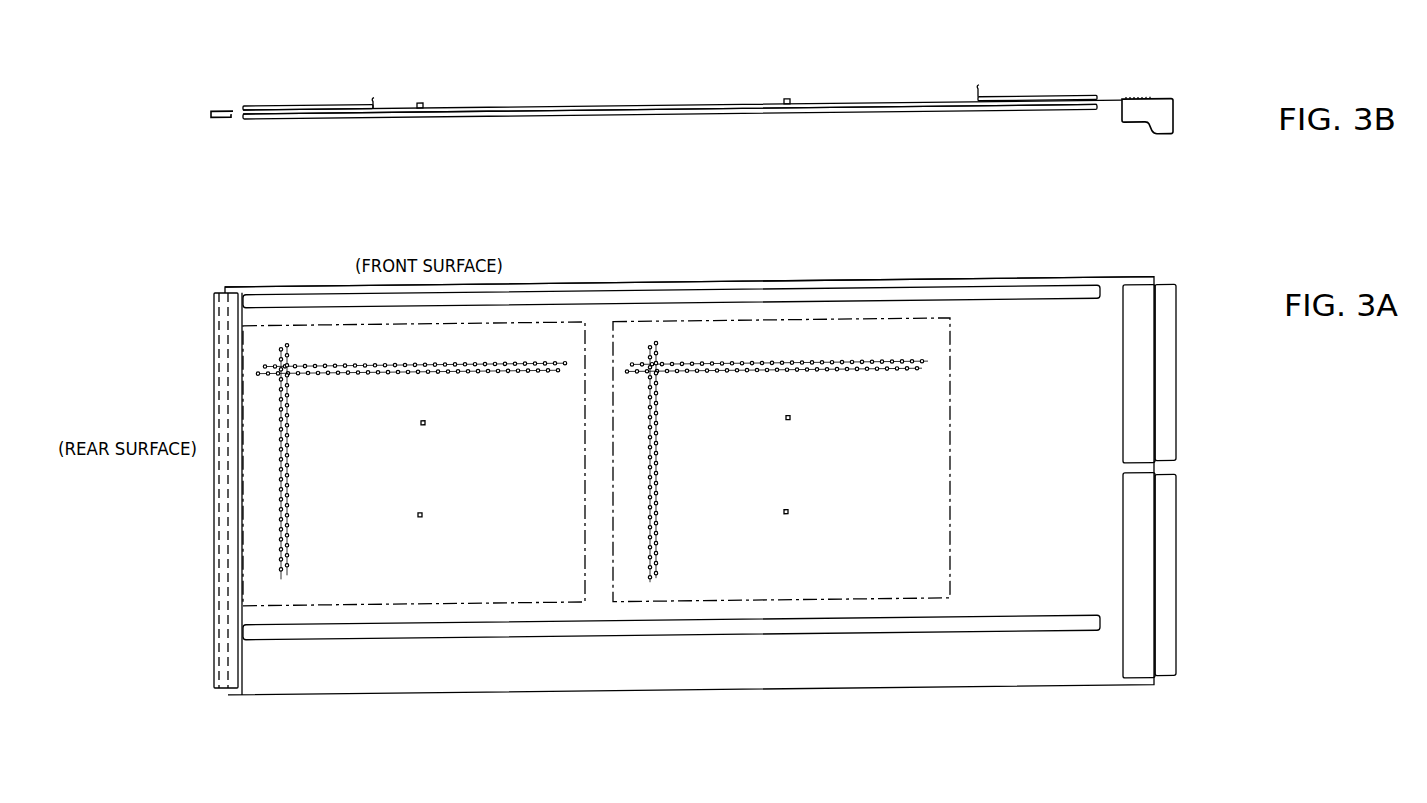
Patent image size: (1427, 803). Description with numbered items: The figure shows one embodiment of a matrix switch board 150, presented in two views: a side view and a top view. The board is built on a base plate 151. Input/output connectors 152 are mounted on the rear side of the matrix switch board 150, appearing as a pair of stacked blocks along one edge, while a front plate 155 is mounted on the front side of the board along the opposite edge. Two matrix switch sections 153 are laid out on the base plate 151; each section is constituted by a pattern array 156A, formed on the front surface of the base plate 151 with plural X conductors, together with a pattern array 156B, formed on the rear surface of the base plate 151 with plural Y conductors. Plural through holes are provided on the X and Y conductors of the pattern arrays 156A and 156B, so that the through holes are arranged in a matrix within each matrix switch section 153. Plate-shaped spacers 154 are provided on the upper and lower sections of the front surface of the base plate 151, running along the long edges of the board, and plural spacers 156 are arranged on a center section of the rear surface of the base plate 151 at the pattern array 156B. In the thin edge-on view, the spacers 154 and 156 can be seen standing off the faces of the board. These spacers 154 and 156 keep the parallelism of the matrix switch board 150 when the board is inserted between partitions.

In FIG. 3B, the matrix switch board 150 is at (692, 114).
In FIG. 3A, the matrix switch board 150 is at (493, 287).
In FIG. 3A, the base plate 151 is at (772, 660).
In FIG. 3A, the input/output connector 152 is at (1179, 569).
In FIG. 3A, the matrix switch section 153 is at (533, 356).
In FIG. 3B, the plate-shaped spacer 154 is at (753, 113).
In FIG. 3A, the plate-shaped spacer 154 is at (328, 293).
In FIG. 3A, the front plate 155 is at (213, 493).
In FIG. 3B, the spacer 156 is at (425, 101).
In FIG. 3A, the pattern array 156A is at (363, 363).
In FIG. 3A, the pattern array 156B is at (282, 473).